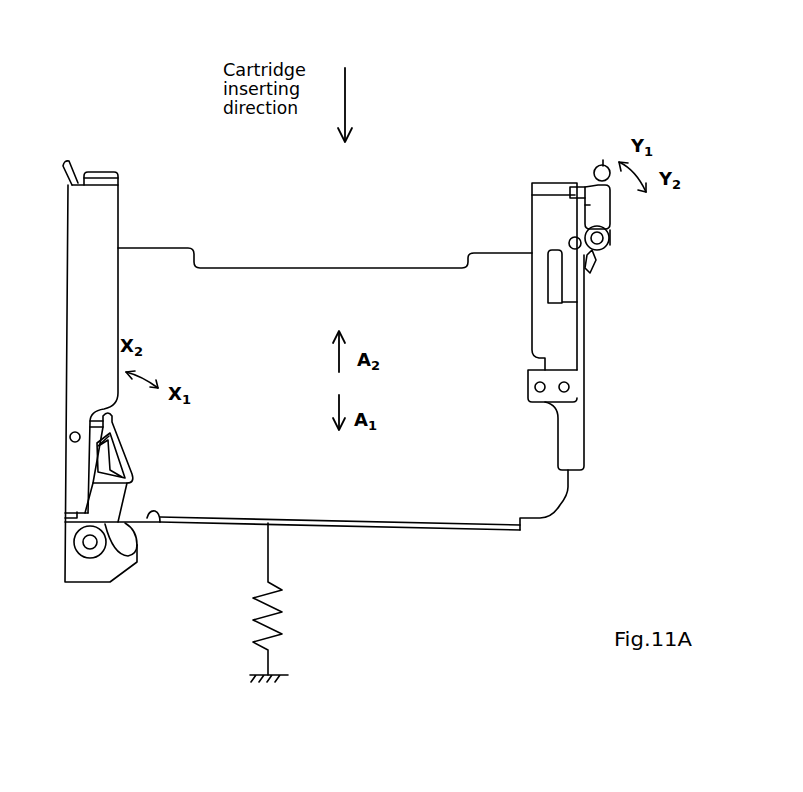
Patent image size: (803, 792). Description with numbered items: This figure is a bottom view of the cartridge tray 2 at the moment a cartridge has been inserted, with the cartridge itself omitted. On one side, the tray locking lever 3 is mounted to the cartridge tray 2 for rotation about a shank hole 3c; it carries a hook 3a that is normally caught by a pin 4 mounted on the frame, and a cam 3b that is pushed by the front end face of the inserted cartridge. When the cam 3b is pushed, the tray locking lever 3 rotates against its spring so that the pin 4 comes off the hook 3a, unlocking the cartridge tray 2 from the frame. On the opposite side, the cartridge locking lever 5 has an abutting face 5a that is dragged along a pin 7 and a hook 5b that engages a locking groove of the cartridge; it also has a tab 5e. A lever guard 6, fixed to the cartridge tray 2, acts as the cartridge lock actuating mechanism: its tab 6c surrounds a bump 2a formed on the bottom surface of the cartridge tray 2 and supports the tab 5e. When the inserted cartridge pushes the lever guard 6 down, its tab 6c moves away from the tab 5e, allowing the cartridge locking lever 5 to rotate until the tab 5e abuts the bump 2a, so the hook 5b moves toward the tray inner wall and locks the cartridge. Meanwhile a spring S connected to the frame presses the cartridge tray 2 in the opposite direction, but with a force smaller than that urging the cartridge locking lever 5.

The cartridge tray 2 is at (362, 510).
The bump 2a is at (570, 242).
The tray locking lever 3 is at (108, 502).
The hook 3a is at (113, 438).
The cam 3b is at (150, 522).
The shank hole 3c is at (92, 549).
The pin 4 is at (70, 433).
The cartridge locking lever 5 is at (603, 211).
The abutting face 5a is at (594, 178).
The hook 5b is at (574, 190).
The tab 5e is at (584, 208).
The lever guard 6 is at (570, 342).
The tab 6c is at (608, 244).
The pin 7 is at (603, 160).
The spring S is at (283, 625).